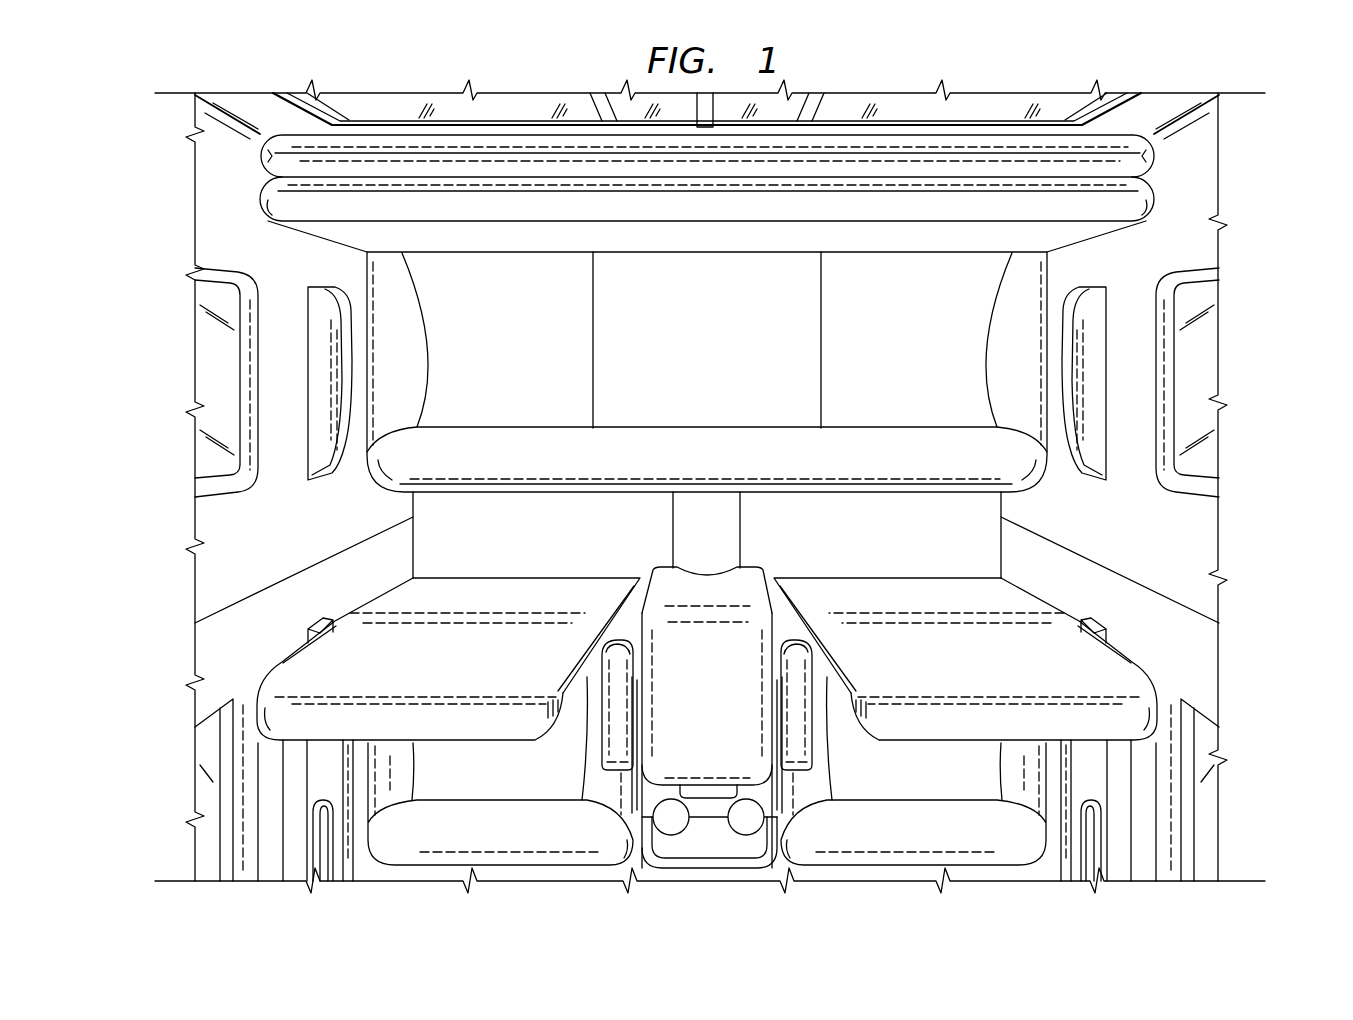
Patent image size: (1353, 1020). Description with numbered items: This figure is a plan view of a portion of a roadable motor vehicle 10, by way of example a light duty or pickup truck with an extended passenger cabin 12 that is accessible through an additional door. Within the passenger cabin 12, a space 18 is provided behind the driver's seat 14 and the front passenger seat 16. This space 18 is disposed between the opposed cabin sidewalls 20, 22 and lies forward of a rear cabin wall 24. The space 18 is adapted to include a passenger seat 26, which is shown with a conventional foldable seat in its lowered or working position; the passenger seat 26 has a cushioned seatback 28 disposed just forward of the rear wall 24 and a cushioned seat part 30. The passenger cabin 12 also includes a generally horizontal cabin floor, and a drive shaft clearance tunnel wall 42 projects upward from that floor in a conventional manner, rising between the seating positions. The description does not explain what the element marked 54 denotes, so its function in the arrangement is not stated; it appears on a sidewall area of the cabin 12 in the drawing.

The roadable motor vehicle 10 is at (740, 467).
The passenger cabin 12 is at (1209, 527).
The driver's seat 14 is at (946, 723).
The front passenger seat 16 is at (475, 725).
The space 18 is at (716, 539).
The cabin sidewall 20 is at (1201, 181).
The cabin sidewall 22 is at (213, 180).
The rear cabin wall 24 is at (265, 106).
The passenger seat 26 is at (714, 153).
The cushioned seatback 28 is at (893, 170).
The cushioned seat part 30 is at (861, 506).
The drive shaft clearance tunnel wall 42 is at (735, 517).
The lamp 54 is at (1097, 300).